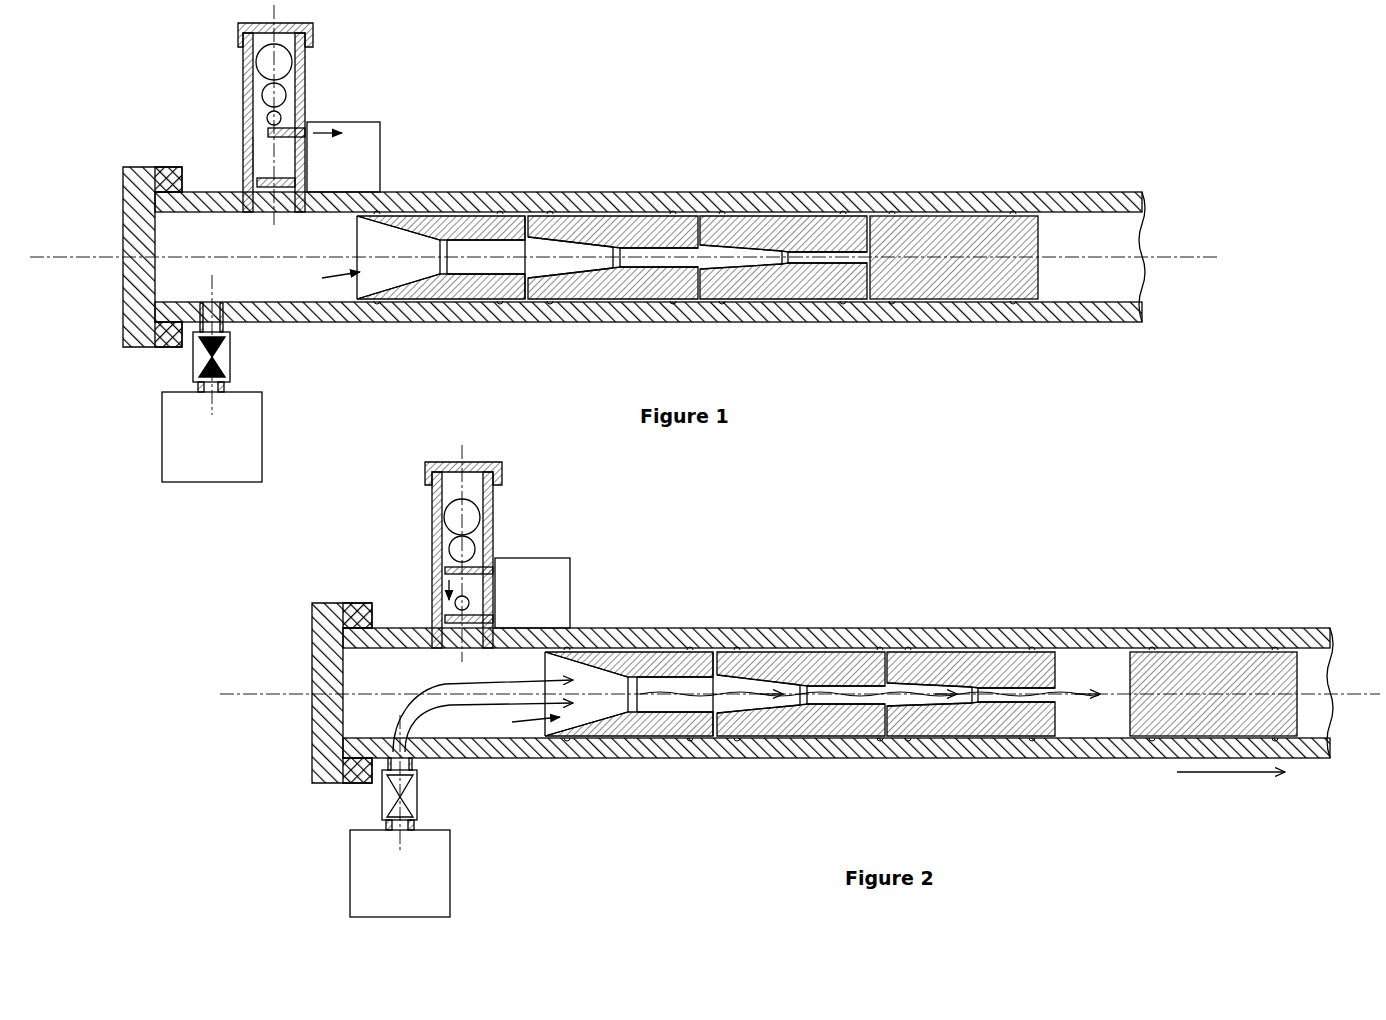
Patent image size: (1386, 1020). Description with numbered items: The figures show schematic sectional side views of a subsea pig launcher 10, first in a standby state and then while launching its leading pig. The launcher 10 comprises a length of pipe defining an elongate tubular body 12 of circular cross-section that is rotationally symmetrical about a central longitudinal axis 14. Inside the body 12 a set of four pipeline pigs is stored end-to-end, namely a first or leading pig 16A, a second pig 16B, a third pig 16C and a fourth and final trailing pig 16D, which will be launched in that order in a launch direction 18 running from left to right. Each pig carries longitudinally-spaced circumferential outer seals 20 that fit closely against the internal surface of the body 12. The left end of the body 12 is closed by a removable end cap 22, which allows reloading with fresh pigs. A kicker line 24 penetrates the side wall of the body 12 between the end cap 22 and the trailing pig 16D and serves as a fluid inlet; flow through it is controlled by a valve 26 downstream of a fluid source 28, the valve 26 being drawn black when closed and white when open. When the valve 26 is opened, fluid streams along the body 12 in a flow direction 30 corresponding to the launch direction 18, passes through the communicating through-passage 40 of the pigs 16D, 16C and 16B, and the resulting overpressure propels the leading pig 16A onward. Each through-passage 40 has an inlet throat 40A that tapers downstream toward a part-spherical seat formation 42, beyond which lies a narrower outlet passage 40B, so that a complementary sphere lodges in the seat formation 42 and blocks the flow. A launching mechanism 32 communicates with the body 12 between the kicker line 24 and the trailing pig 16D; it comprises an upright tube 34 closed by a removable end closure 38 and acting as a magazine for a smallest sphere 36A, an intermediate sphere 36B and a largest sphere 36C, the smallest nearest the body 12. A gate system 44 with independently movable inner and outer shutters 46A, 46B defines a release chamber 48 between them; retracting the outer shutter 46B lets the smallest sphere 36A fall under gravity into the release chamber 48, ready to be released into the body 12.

In FIG. 1, the subsea pig launcher 10 is at (982, 140).
In FIG. 2, the subsea pig launcher 10 is at (1264, 585).
In FIG. 1, the elongate tubular body 12 is at (1090, 196).
In FIG. 2, the elongate tubular body 12 is at (943, 635).
In FIG. 1, the central longitudinal axis 14 is at (1200, 260).
In FIG. 2, the central longitudinal axis 14 is at (252, 698).
In FIG. 1, the first or leading pig 16A is at (958, 287).
In FIG. 2, the first or leading pig 16A is at (1160, 727).
In FIG. 1, the second pig 16B is at (750, 228).
In FIG. 2, the second pig 16B is at (975, 727).
In FIG. 1, the third pig 16C is at (627, 283).
In FIG. 2, the third pig 16C is at (790, 727).
In FIG. 1, the fourth and final, trailing pig 16D is at (437, 287).
In FIG. 2, the fourth and final, trailing pig 16D is at (643, 730).
In FIG. 2, the launch direction 18 is at (1228, 774).
In FIG. 1, the circumferential outer seals 20 is at (892, 211).
In FIG. 1, the end cap 22 is at (130, 200).
In FIG. 2, the end cap 22 is at (312, 632).
In FIG. 1, the kicker line 24 is at (216, 323).
In FIG. 2, the kicker line 24 is at (408, 770).
In FIG. 1, the valve 26 is at (197, 362).
In FIG. 2, the valve 26 is at (388, 795).
In FIG. 1, the fluid source 28 is at (167, 442).
In FIG. 2, the fluid source 28 is at (357, 887).
In FIG. 2, the flow direction 30 is at (445, 688).
In FIG. 1, the launching mechanism 32 is at (152, 85).
In FIG. 2, the launching mechanism 32 is at (402, 459).
In FIG. 1, the tube 34 is at (243, 63).
In FIG. 2, the tube 34 is at (432, 512).
In FIG. 1, the first, smallest sphere 36A is at (282, 117).
In FIG. 2, the first, smallest sphere 36A is at (470, 604).
In FIG. 1, the second, intermediate sphere 36B is at (265, 95).
In FIG. 2, the second, intermediate sphere 36B is at (452, 548).
In FIG. 1, the third, largest sphere 36C is at (283, 66).
In FIG. 2, the third, largest sphere 36C is at (472, 519).
In FIG. 1, the end closure 38 is at (313, 36).
In FIG. 2, the end closure 38 is at (503, 475).
In FIG. 1, the through-passage 40 is at (326, 281).
In FIG. 2, the through-passage 40 is at (520, 728).
In FIG. 1, the inlet throat 40A is at (373, 245).
In FIG. 2, the inlet throat 40A is at (545, 673).
In FIG. 1, the outlet passage 40B is at (657, 250).
In FIG. 1, the part-spherical seat formation 42 is at (445, 245).
In FIG. 2, the part-spherical seat formation 42 is at (805, 688).
In FIG. 1, the gate system 44 is at (362, 141).
In FIG. 2, the gate system 44 is at (565, 572).
In FIG. 1, the inner shutter 46A is at (300, 183).
In FIG. 2, the inner shutter 46A is at (440, 612).
In FIG. 1, the outer shutter 46B is at (268, 132).
In FIG. 2, the outer shutter 46B is at (442, 568).
In FIG. 1, the release chamber 48 is at (265, 161).
In FIG. 2, the release chamber 48 is at (470, 588).